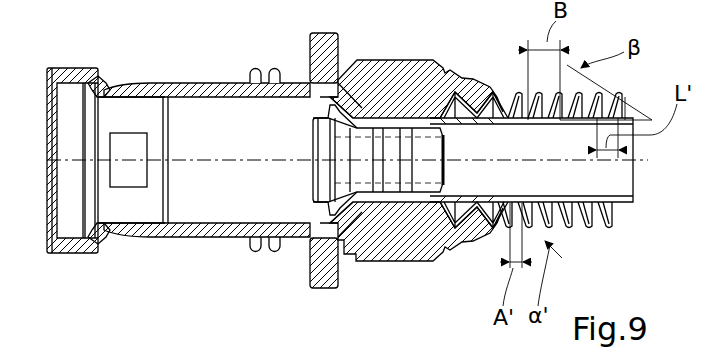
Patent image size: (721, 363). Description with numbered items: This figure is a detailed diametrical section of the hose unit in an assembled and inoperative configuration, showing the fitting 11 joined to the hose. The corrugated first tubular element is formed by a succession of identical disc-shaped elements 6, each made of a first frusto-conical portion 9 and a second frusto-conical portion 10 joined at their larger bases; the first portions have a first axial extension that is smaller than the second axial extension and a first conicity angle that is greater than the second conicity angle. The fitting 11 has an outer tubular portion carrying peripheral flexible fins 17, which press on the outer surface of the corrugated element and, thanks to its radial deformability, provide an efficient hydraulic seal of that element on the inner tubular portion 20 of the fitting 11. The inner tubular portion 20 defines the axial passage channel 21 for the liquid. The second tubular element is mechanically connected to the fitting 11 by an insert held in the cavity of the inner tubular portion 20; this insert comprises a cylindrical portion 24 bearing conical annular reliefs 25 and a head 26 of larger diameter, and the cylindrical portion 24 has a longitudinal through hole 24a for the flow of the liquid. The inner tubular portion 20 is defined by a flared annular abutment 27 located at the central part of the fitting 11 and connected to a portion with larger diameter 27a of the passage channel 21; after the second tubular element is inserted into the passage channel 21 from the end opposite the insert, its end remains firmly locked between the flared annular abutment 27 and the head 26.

The disc-shaped element 6 is at (604, 240).
The first frusto-conical portion 9 is at (627, 207).
The second frusto-conical portion 10 is at (522, 88).
The fitting 11 is at (156, 253).
The flexible fins 17 is at (470, 70).
The inner tubular portion 20 is at (370, 115).
The axial passage channel 21 is at (284, 212).
The cylindrical portion 24 is at (390, 173).
The longitudinal through hole 24a is at (343, 147).
The conical annular reliefs 25 is at (355, 259).
The head 26 is at (310, 226).
The flared annular abutment 27 is at (323, 108).
The portion with larger diameter 27a is at (212, 214).